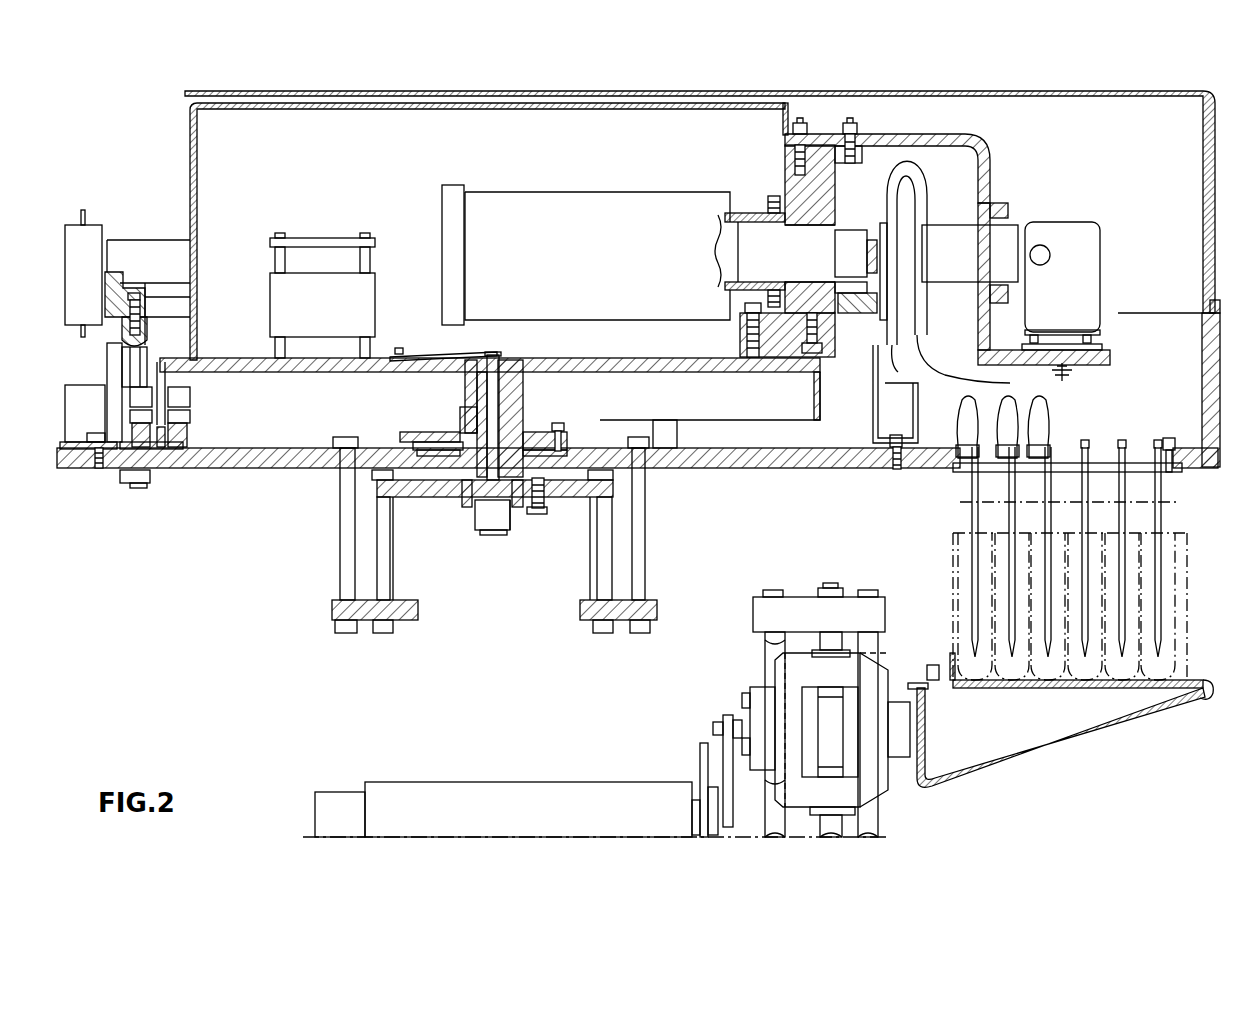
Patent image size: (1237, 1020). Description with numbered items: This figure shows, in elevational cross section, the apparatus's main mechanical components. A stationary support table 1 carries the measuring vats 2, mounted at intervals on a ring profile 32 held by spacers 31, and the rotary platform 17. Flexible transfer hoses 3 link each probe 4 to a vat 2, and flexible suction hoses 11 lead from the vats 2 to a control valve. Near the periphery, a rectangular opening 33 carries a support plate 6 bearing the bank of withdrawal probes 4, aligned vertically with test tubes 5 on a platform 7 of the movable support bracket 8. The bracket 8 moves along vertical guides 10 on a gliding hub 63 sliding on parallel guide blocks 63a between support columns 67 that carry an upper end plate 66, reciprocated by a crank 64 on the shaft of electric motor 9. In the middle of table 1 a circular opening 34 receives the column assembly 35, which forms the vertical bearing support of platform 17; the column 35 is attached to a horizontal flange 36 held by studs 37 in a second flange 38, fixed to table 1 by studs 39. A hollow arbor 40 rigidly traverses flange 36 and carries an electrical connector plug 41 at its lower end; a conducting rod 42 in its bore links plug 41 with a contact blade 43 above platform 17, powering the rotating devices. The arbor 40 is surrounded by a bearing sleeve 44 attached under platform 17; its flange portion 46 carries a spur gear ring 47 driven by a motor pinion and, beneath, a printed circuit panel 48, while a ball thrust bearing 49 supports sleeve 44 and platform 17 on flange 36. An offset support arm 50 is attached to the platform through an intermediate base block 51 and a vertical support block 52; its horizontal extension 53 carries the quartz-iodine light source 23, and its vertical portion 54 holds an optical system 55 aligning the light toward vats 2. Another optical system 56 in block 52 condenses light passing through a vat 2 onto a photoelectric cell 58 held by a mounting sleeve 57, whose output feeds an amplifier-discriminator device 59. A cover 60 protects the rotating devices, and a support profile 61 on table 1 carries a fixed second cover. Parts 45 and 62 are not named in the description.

The stationary support table 1 is at (200, 466).
The measuring vats 2 is at (104, 226).
The flexible transfer hoses 3 is at (930, 372).
The transfer probes 4 is at (1010, 520).
The test tubes 5 is at (992, 555).
The support plate 6 is at (995, 472).
The platform 7 is at (954, 614).
The support bracket 8 is at (1052, 757).
The electric motor 9 is at (625, 795).
The vertical guides 10 is at (898, 807).
The flexible suction hoses 11 is at (865, 340).
The rotary platform 17 is at (245, 360).
The light source 23 is at (1082, 262).
The spacers 31 is at (133, 365).
The ring profile 32 is at (112, 292).
The opening 33 is at (1165, 448).
The circular opening 34 is at (593, 457).
The column assembly 35 is at (510, 517).
The horizontal flange 36 is at (458, 500).
The studs 37 is at (392, 598).
The second flange 38 is at (586, 602).
The studs 39 is at (345, 514).
The hollow arbor 40 is at (480, 410).
The electrical connector plug 41 is at (494, 531).
The conducting rod 42 is at (497, 361).
The contact blade 43 is at (455, 352).
The bearing sleeve 44 is at (462, 389).
The plate 45 is at (462, 465).
The flange portion 46 is at (555, 432).
The spur gear ring 47 is at (575, 430).
The printed circuit panel 48 is at (545, 480).
The ball thrust bearing 49 is at (464, 488).
The offset support arm 50 is at (910, 126).
The intermediate base block 51 is at (743, 342).
The vertical support block 52 is at (805, 180).
The horizontal extension 53 is at (1100, 362).
The vertical portion 54 is at (985, 186).
The optical system 55 is at (988, 248).
The optical system 56 is at (849, 238).
The mounting sleeve 57 is at (756, 215).
The photoelectric cell 58 is at (618, 212).
The amplifier-discriminator device 59 is at (455, 192).
The cover 60 is at (192, 167).
The support profile 61 is at (1080, 91).
The side wall 62 is at (1205, 350).
The gliding hub 63 is at (800, 670).
The vertical guide blocks 63a is at (822, 642).
The crank 64 is at (728, 770).
The upper end plate 66 is at (765, 612).
The support columns 67 is at (875, 645).